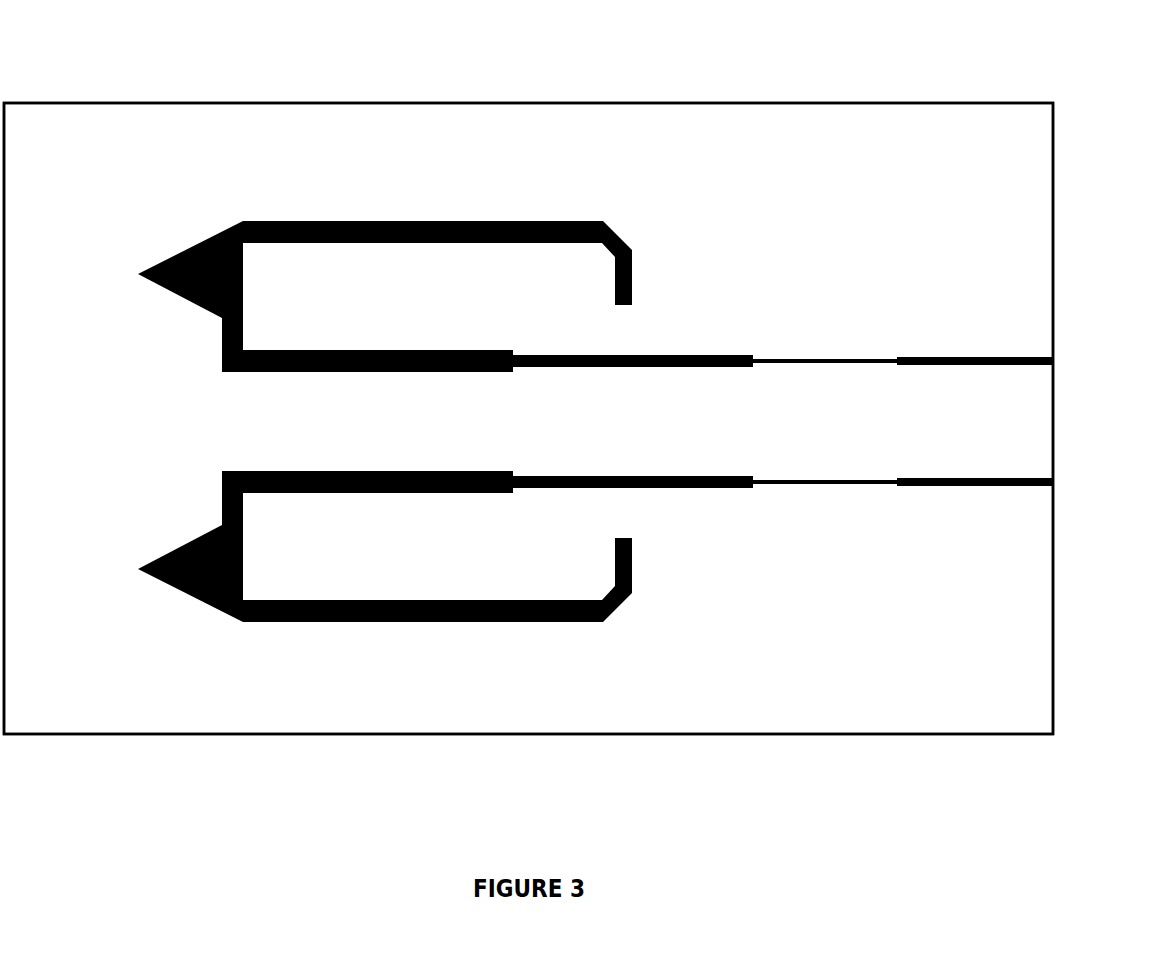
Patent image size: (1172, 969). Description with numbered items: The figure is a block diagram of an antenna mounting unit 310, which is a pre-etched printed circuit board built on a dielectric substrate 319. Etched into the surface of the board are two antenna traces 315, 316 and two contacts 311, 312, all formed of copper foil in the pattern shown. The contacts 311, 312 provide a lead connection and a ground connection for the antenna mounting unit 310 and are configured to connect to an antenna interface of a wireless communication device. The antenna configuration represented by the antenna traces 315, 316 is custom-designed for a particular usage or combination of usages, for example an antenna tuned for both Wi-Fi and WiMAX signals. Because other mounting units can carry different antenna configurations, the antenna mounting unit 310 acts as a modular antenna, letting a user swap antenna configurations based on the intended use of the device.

The antenna mounting unit 310 is at (1070, 68).
The dielectric substrate 319 is at (531, 103).
The antenna trace 315 is at (573, 222).
The antenna trace 316 is at (573, 621).
The contact 311 is at (958, 357).
The contact 312 is at (958, 478).